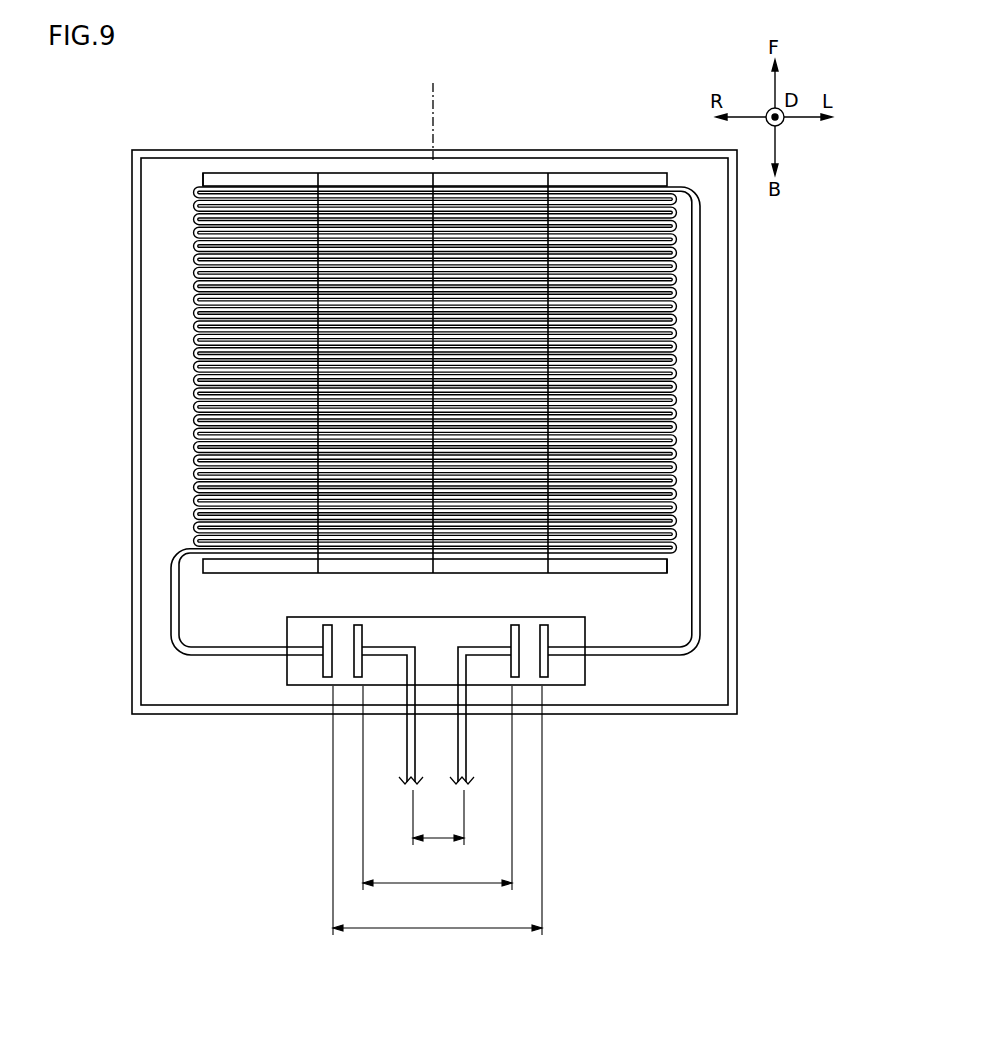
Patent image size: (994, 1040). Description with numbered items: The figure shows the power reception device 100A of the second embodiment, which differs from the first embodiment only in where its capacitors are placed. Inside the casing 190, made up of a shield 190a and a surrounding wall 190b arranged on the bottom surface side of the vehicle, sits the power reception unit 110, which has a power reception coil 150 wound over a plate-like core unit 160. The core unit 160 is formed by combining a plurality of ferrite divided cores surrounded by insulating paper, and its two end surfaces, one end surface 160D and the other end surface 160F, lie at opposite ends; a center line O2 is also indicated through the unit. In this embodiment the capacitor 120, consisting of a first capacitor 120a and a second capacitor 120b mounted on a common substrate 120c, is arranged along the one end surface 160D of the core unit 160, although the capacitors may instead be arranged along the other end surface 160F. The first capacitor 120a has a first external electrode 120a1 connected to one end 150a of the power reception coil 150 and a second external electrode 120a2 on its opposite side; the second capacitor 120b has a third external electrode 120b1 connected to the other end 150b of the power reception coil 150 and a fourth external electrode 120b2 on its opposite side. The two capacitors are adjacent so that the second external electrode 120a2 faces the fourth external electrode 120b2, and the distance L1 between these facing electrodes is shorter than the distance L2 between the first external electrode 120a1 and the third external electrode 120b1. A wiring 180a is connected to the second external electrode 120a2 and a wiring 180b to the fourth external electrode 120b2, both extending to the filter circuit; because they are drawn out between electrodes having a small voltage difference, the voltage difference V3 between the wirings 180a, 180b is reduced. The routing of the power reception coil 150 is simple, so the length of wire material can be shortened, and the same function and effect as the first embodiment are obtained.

The power reception device 100A is at (750, 758).
The power reception unit 110 is at (385, 88).
The capacitor 120 is at (446, 684).
The first capacitor 120a is at (532, 684).
The first external electrode 120a1 is at (547, 666).
The second external electrode 120a2 is at (506, 638).
The second capacitor 120b is at (343, 684).
The third external electrode 120b1 is at (323, 666).
The fourth external electrode 120b2 is at (362, 638).
The substrate 120c is at (297, 668).
The power reception coil 150 is at (370, 186).
The one end of power reception coil 150a is at (692, 646).
The other end of power reception coil 150b is at (176, 650).
The core unit 160 is at (285, 178).
The other end surface 160F is at (228, 175).
The one end surface 160D is at (625, 576).
The wiring 180a is at (463, 760).
The wiring 180b is at (411, 760).
The casing 190 is at (434, 391).
The shield 190a is at (642, 167).
The surrounding wall 190b is at (665, 96).
The center axis O2 is at (433, 96).
The voltage difference V3 is at (438, 817).
The distance between second external electrode and fourth external electrode L1 is at (437, 788).
The distance between first external electrode and third external electrode L2 is at (437, 810).